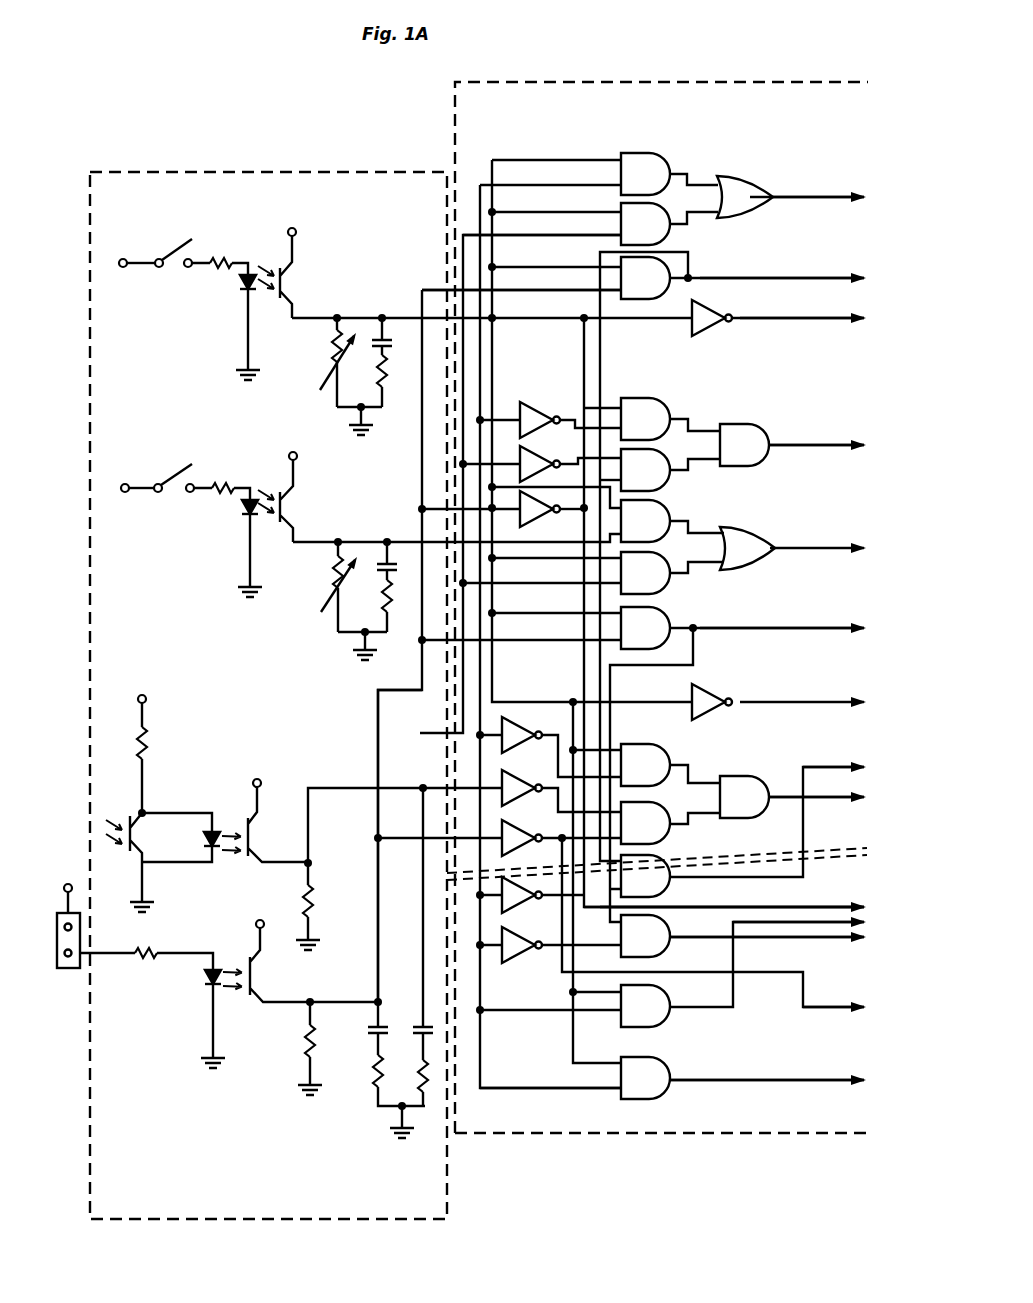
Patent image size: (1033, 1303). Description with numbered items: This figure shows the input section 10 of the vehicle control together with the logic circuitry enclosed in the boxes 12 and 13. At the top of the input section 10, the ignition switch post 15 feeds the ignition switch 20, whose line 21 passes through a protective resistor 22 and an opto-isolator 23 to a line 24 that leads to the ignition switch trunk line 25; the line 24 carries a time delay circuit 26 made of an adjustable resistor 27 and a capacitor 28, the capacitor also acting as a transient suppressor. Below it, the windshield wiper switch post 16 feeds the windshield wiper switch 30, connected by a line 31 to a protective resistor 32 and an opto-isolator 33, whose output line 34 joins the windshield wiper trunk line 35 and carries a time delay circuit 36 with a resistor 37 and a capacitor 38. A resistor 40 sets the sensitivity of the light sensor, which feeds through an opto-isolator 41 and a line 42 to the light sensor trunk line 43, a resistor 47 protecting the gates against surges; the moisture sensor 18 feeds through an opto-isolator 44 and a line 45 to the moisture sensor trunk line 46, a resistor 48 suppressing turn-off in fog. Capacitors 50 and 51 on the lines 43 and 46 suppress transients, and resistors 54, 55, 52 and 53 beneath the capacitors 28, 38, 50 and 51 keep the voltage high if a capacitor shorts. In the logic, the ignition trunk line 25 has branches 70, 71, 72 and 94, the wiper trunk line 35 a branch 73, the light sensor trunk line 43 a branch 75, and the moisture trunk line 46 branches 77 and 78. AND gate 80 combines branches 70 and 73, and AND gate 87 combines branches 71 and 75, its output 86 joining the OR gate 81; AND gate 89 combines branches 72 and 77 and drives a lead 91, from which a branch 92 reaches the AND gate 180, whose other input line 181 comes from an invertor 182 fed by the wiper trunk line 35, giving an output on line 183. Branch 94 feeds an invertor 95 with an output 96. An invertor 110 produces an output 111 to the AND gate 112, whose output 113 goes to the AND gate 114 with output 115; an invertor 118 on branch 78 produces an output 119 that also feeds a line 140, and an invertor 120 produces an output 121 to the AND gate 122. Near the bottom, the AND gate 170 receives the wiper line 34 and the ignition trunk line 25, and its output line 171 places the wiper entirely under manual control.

The input section 10 is at (215, 171).
The logic circuitry box 12 is at (666, 80).
The logic circuitry box 13 is at (668, 1141).
The ignition switch post 15 is at (121, 267).
The windshield wiper switch post 16 is at (123, 492).
The moisture sensor 18 is at (72, 972).
The ignition switch 20 is at (142, 251).
The line 21 is at (176, 248).
The protective resistor 22 is at (220, 251).
The opto-isolator 23 is at (238, 284).
The line 24 is at (402, 316).
The ignition switch trunk line 25 is at (494, 250).
The time delay circuit 26 is at (330, 350).
The adjustable resistor 27 is at (327, 361).
The capacitor 28 is at (365, 345).
The windshield wiper switch 30 is at (147, 473).
The line 31 is at (177, 469).
The protective resistor 32 is at (222, 476).
The opto-isolator 33 is at (242, 511).
The output line 34 is at (406, 540).
The windshield wiper trunk line 35 is at (484, 760).
The time delay circuit 36 is at (326, 600).
The resistor 37 is at (332, 562).
The capacitor 38 is at (372, 568).
The resistor 40 is at (150, 745).
The opto-isolator 41 is at (270, 830).
The line 42 is at (258, 860).
The light sensor trunk line 43 is at (420, 736).
The opto-isolator 44 is at (196, 986).
The line 45 is at (292, 1005).
The moisture sensor trunk line 46 is at (376, 705).
The resistor 47 is at (316, 905).
The resistor 48 is at (304, 1037).
The capacitor 50 is at (370, 1018).
The capacitor 51 is at (422, 1020).
The resistor 52 is at (372, 1062).
The resistor 53 is at (420, 1070).
The resistor 54 is at (390, 385).
The resistor 55 is at (394, 612).
The ignition branch line 70 is at (552, 158).
The ignition branch 71 is at (556, 201).
The ignition branch 72 is at (556, 255).
The windshield wiper branch line 73 is at (566, 184).
The light sensor branch 75 is at (542, 225).
The moisture sensor branch 77 is at (521, 278).
The moisture sensor branch line 78 is at (469, 497).
The AND gate 80 is at (645, 174).
The OR gate 81 is at (763, 190).
The output 86 is at (694, 199).
The AND gate 87 is at (645, 224).
The AND gate 89 is at (645, 278).
The lead 91 is at (767, 268).
The branch 92 is at (682, 252).
The ignition branch 94 is at (643, 601).
The invertor 95 is at (722, 312).
The output 96 is at (798, 305).
The invertor 110 is at (516, 410).
The output 111 is at (572, 424).
The AND gate 112 is at (627, 419).
The output 113 is at (702, 420).
The AND gate 114 is at (744, 445).
The output 115 is at (812, 432).
The invertor 118 is at (539, 516).
The output 119 is at (568, 525).
The invertor 120 is at (518, 459).
The output 121 is at (584, 466).
The AND gate 122 is at (635, 470).
The line 140 is at (744, 906).
The AND gate 170 is at (660, 1012).
The line 171 is at (716, 990).
The AND gate 180 is at (668, 882).
The input line 181 is at (532, 891).
The invertor 182 is at (500, 915).
The line 183 is at (816, 766).